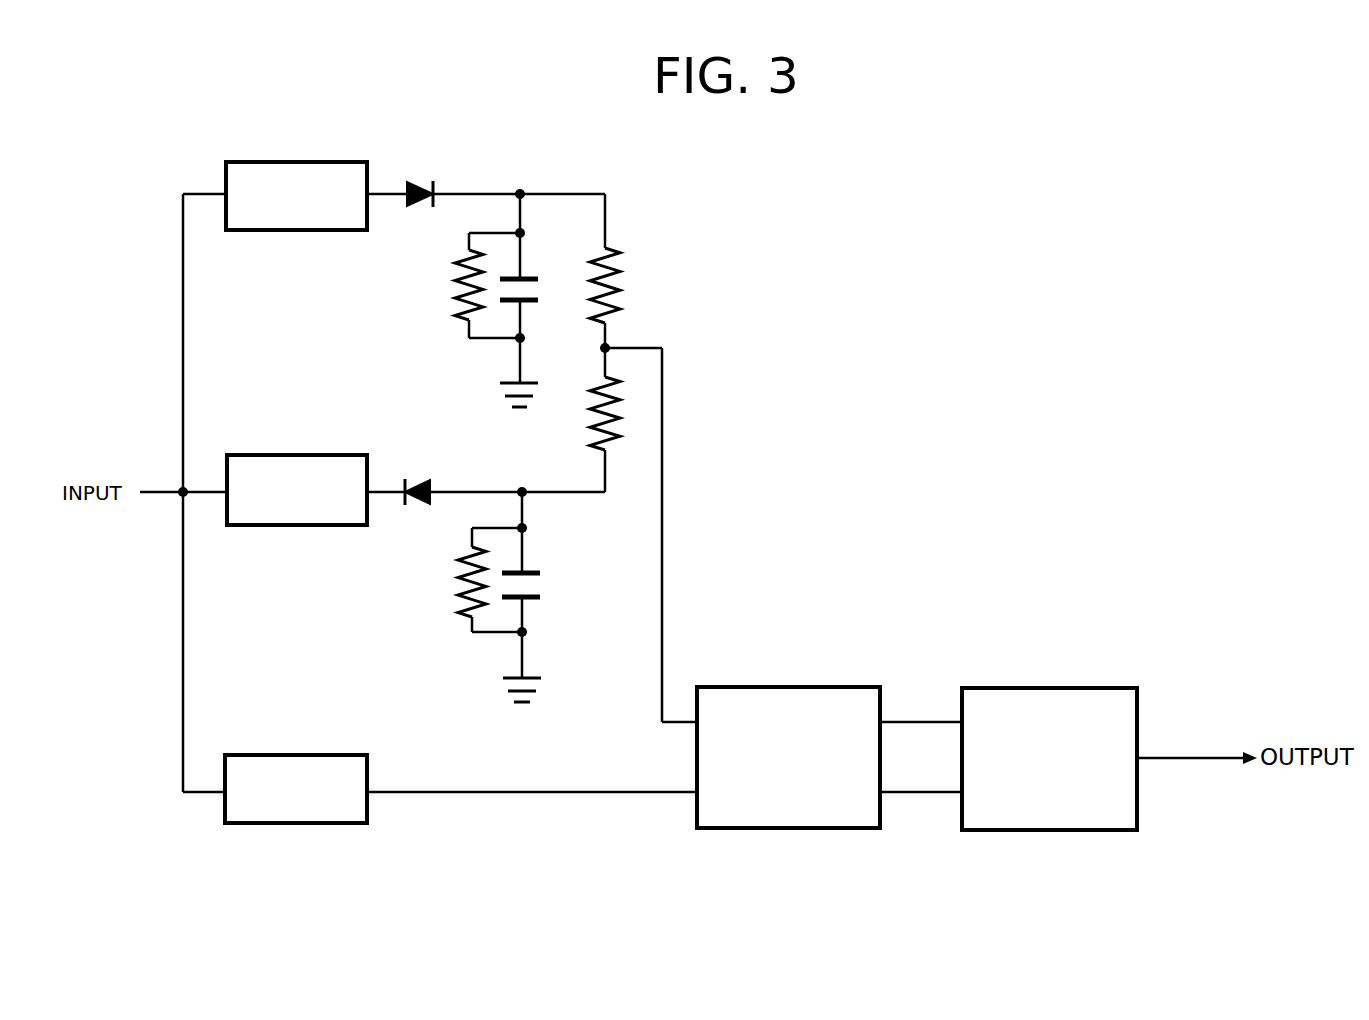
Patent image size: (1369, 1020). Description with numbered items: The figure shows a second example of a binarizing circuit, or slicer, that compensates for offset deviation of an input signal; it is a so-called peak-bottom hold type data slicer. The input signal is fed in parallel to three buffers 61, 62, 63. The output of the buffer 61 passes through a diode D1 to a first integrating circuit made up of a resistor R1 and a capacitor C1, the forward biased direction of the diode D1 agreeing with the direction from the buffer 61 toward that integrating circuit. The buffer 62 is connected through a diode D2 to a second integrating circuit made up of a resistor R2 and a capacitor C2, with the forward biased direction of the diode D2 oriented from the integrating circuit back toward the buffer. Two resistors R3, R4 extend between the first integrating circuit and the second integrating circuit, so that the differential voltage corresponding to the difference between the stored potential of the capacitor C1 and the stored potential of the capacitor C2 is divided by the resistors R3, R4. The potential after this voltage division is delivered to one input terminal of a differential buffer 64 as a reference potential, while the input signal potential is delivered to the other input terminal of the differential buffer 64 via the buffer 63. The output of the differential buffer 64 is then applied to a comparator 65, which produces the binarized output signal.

The buffer 61 is at (297, 232).
The buffer 62 is at (299, 527).
The buffer 63 is at (285, 755).
The differential buffer 64 is at (748, 687).
The comparator 65 is at (1025, 688).
The diode D1 is at (421, 177).
The diode D2 is at (416, 474).
The resistor R1 is at (468, 285).
The resistor R2 is at (470, 580).
The resistor R3 is at (622, 285).
The resistor R4 is at (622, 413).
The capacitor C1 is at (535, 291).
The capacitor C2 is at (540, 588).